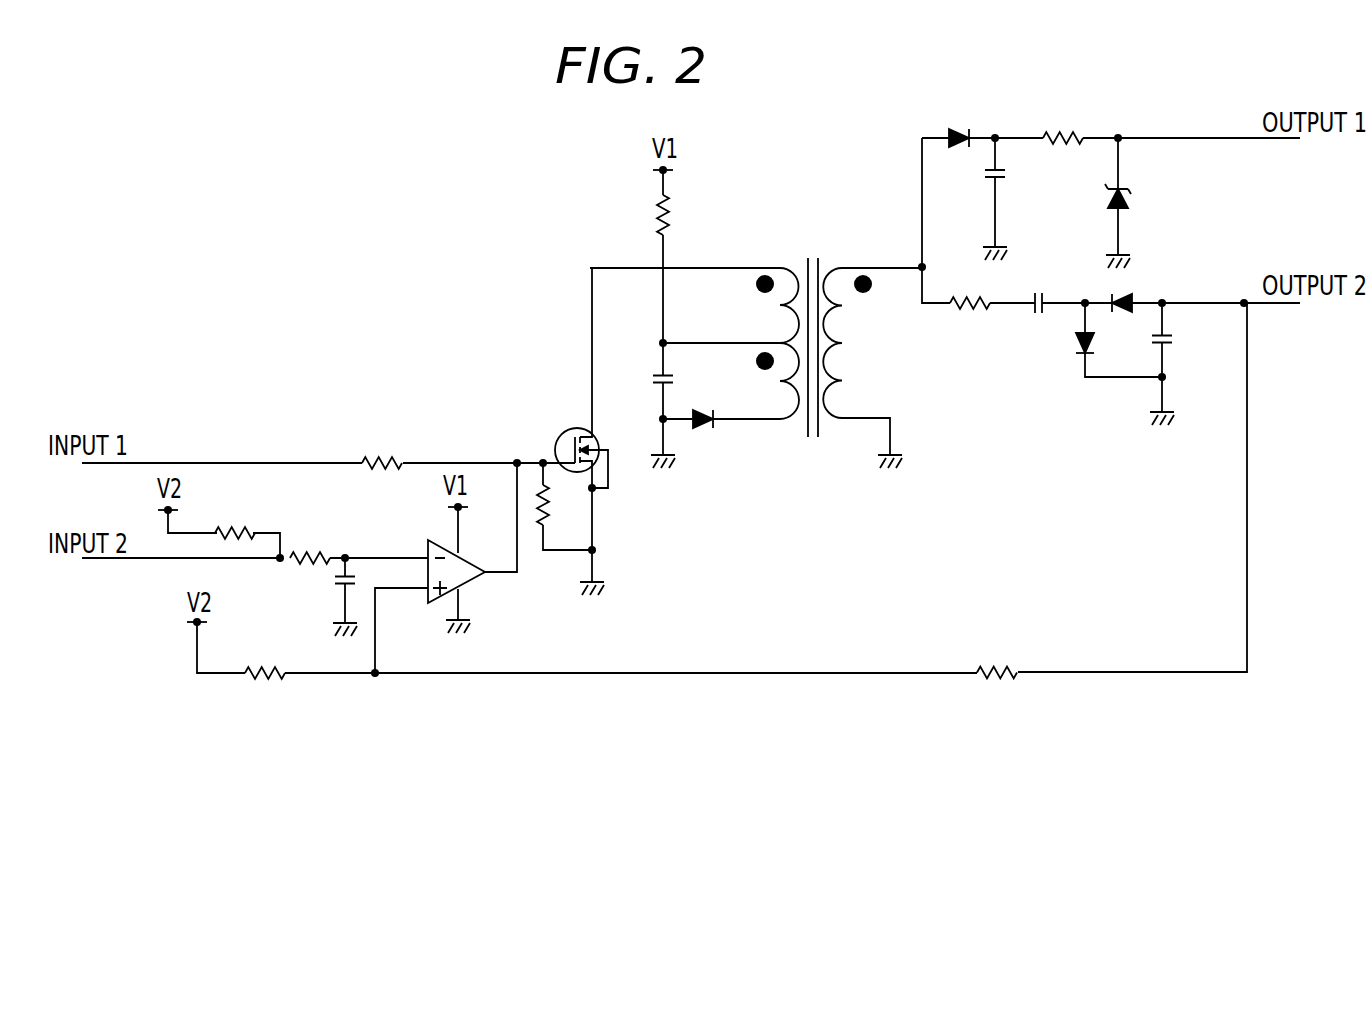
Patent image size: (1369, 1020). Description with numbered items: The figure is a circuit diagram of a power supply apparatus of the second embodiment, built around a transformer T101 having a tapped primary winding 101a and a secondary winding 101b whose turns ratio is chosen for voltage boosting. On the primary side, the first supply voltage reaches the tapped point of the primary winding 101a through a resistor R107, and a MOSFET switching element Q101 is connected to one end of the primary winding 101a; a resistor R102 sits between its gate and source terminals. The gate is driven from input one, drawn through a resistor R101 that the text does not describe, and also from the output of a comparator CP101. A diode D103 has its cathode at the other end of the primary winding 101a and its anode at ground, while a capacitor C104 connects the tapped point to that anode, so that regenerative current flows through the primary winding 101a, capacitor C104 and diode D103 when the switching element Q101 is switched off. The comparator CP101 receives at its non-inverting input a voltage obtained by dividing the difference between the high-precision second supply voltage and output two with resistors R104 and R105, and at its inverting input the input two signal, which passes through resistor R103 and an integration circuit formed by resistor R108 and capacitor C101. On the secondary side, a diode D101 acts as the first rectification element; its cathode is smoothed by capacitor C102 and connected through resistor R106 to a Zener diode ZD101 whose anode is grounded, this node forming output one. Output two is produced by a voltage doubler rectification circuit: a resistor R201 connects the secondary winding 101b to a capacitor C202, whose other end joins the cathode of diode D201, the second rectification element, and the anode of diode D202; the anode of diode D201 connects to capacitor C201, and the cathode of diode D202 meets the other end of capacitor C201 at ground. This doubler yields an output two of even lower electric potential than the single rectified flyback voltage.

The resistor R101 is at (384, 446).
The resistor R102 is at (553, 510).
The resistor R103 is at (236, 516).
The resistor R104 is at (264, 657).
The resistor R105 is at (997, 654).
The resistor R106 is at (1064, 120).
The resistor R107 is at (631, 269).
The resistor R108 is at (317, 542).
The resistor R201 is at (983, 323).
The capacitor C101 is at (322, 597).
The capacitor C102 is at (1023, 199).
The capacitor C104 is at (640, 403).
The capacitor C201 is at (1187, 364).
The capacitor C202 is at (1058, 321).
The diode D101 is at (963, 121).
The diode D103 is at (721, 406).
The diode D201 is at (1133, 298).
The diode D202 is at (1073, 345).
The Zener diode ZD101 is at (1158, 203).
The comparator CP101 is at (454, 568).
The switching element Q101 is at (564, 431).
The transformer T101 is at (756, 330).
The primary winding 101a is at (737, 268).
The secondary winding 101b is at (878, 268).